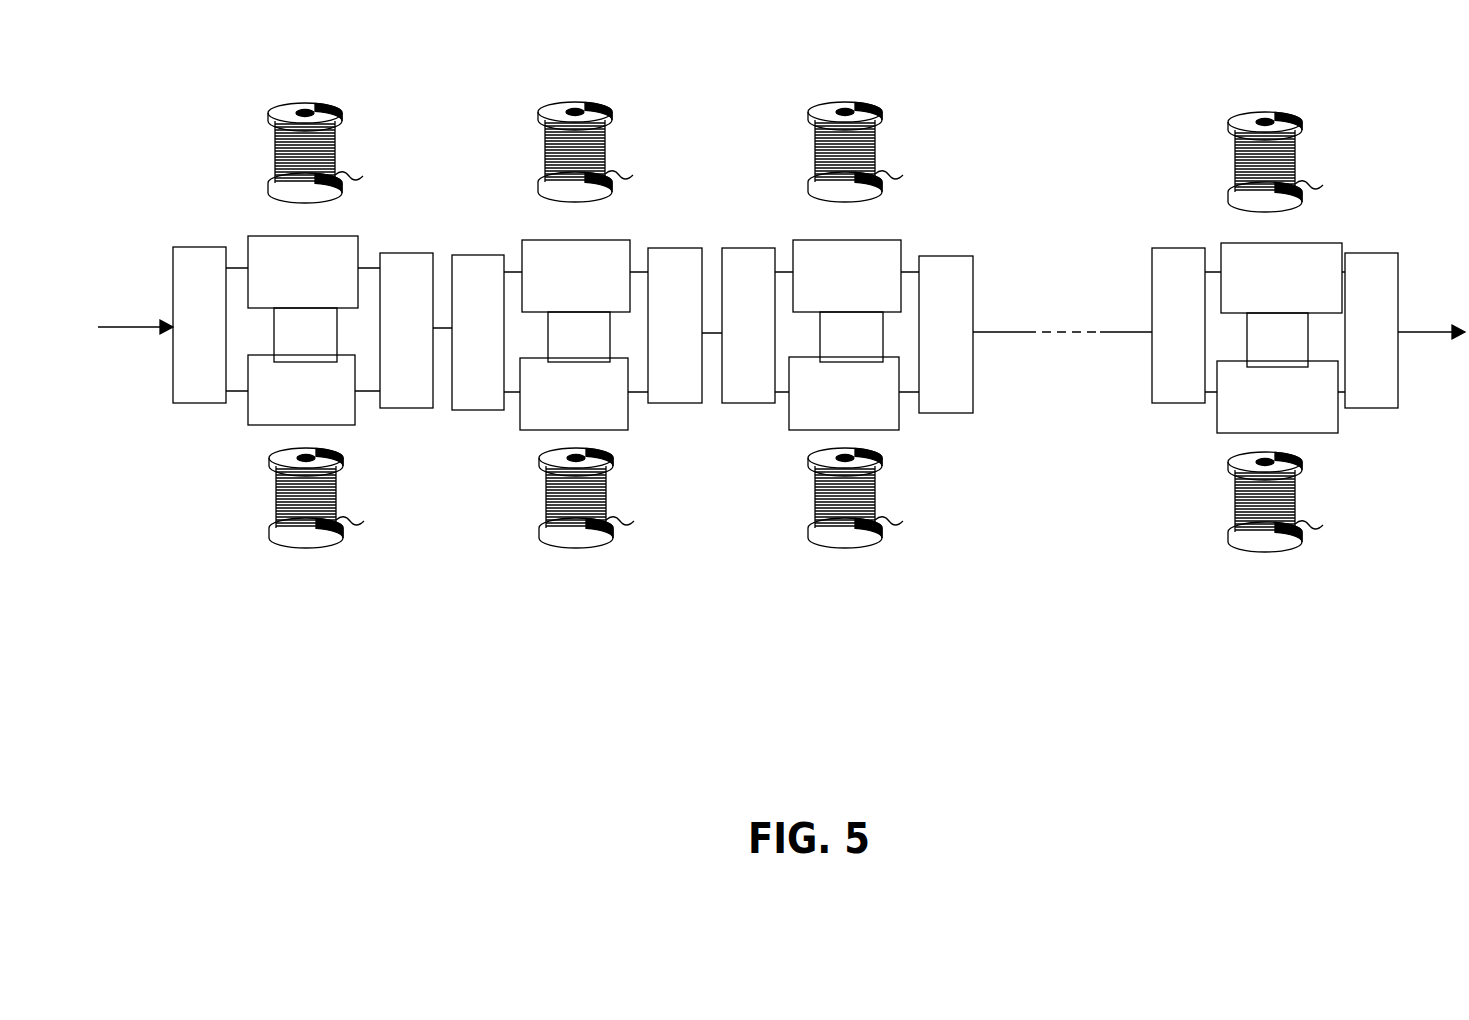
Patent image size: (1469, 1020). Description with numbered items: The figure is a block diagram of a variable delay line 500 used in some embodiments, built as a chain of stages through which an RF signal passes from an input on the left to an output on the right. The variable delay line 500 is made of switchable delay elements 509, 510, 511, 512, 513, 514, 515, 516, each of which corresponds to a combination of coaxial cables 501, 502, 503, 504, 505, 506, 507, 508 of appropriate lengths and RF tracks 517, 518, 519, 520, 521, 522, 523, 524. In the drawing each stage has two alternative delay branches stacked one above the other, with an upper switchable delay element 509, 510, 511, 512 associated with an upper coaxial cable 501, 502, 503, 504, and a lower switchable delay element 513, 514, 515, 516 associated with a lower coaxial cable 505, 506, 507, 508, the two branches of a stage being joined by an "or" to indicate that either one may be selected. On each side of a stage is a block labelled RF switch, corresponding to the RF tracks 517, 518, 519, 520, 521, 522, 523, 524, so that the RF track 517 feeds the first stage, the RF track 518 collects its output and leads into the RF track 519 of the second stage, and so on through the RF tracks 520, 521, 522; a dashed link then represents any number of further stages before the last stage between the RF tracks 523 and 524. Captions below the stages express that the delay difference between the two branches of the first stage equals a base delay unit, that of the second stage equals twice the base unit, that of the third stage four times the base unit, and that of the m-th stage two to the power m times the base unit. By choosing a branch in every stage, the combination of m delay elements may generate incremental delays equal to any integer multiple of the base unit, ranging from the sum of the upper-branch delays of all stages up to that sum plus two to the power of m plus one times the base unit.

The binary-weighted switchable delay line system 500 is at (215, 768).
The coaxial cable 501 is at (300, 92).
The coaxial cable 502 is at (566, 92).
The coaxial cable 503 is at (840, 92).
The coaxial cable 504 is at (1259, 92).
The coaxial cable 505 is at (270, 497).
The coaxial cable 506 is at (539, 498).
The coaxial cable 507 is at (805, 498).
The coaxial cable 508 is at (1232, 498).
The switchable delay element 509 is at (253, 225).
The switchable delay element 510 is at (520, 225).
The switchable delay element 511 is at (793, 225).
The switchable delay element 512 is at (1213, 225).
The switchable delay element 513 is at (252, 444).
The switchable delay element 514 is at (520, 443).
The switchable delay element 515 is at (787, 443).
The switchable delay element 516 is at (1213, 443).
The RF track 517 is at (200, 242).
The RF track 518 is at (398, 242).
The RF track 519 is at (463, 242).
The RF track 520 is at (665, 242).
The RF track 521 is at (740, 242).
The RF track 522 is at (938, 242).
The RF track 523 is at (1160, 242).
The RF track 524 is at (1382, 242).